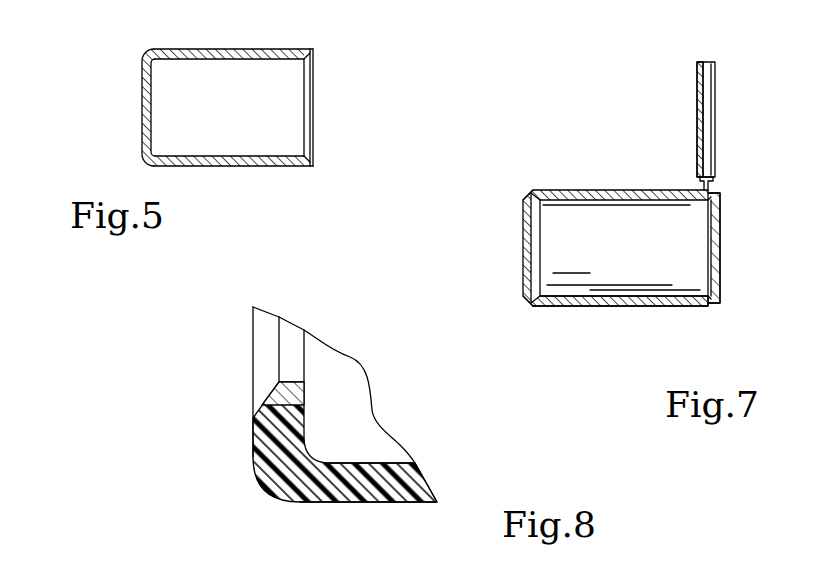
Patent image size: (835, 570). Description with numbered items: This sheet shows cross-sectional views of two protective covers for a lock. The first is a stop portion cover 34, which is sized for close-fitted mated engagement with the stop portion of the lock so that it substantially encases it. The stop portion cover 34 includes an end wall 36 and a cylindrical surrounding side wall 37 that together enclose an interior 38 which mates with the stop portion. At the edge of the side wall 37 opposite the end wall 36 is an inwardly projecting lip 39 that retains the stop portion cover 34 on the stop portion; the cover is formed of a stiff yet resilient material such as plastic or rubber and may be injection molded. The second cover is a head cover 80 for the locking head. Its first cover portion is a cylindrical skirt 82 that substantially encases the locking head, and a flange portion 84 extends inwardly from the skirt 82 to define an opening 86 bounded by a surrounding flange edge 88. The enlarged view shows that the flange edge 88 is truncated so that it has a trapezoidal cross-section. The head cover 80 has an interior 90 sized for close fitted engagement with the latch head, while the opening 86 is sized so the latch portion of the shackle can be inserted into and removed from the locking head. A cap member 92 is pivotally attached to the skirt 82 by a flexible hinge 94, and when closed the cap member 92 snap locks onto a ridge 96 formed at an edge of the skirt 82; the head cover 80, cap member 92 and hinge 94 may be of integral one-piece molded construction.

In FIG. 5, the stop portion cover 34 is at (122, 49).
In FIG. 5, the end wall 36 is at (146, 99).
In FIG. 5, the cylindrical surrounding side wall 37 is at (218, 167).
In FIG. 5, the interior 38 is at (234, 119).
In FIG. 5, the inwardly projecting lip 39 is at (313, 153).
In FIG. 7, the head cover 80 is at (498, 178).
In FIG. 7, the cylindrical skirt 82 is at (605, 306).
In FIG. 8, the cylindrical skirt 82 is at (370, 500).
In FIG. 7, the flange portion 84 is at (525, 297).
In FIG. 8, the flange portion 84 is at (263, 445).
In FIG. 7, the opening 86 is at (502, 247).
In FIG. 7, the flange edge 88 is at (533, 220).
In FIG. 8, the flange edge 88 is at (290, 382).
In FIG. 7, the interior 90 is at (631, 257).
In FIG. 7, the cap member 92 is at (700, 115).
In FIG. 7, the flexible hinge 94 is at (708, 190).
In FIG. 7, the ridge 96 is at (718, 305).